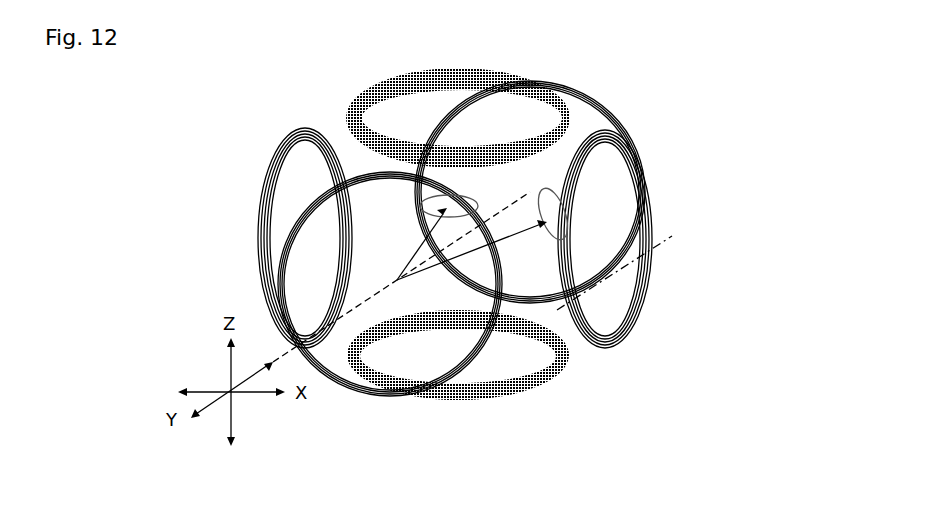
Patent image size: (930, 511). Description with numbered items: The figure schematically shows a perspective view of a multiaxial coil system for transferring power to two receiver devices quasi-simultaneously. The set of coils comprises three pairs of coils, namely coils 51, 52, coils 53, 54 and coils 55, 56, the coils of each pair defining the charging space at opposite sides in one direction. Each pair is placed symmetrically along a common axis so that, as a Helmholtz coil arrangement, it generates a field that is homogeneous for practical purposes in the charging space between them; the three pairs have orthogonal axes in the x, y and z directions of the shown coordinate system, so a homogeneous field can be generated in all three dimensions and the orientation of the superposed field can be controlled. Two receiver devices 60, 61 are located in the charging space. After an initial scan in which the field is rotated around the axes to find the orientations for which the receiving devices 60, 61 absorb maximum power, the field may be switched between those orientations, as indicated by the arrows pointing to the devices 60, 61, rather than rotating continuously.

The coil 51 is at (570, 361).
The coil 52 is at (456, 66).
The coil 53 is at (653, 221).
The coil 54 is at (258, 238).
The coil 55 is at (608, 106).
The coil 56 is at (470, 362).
The receiver device 60 is at (569, 203).
The receiver device 61 is at (438, 205).